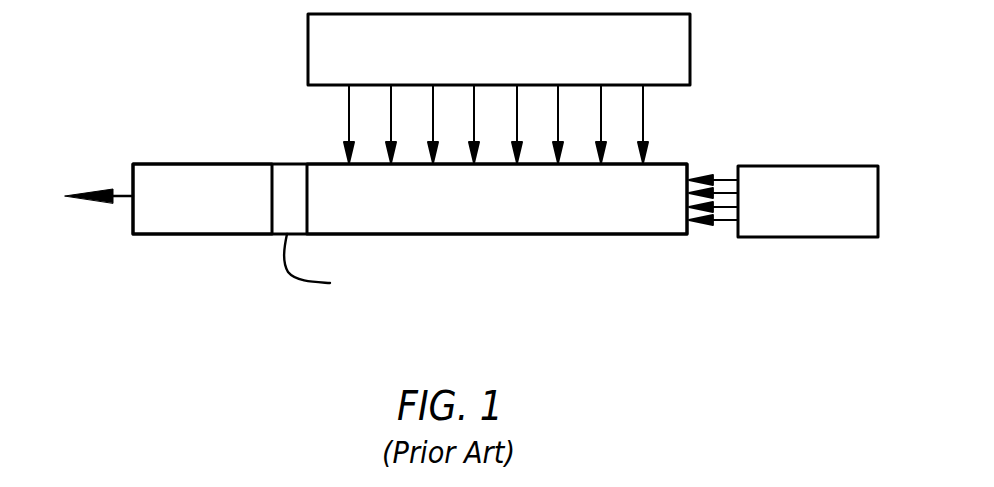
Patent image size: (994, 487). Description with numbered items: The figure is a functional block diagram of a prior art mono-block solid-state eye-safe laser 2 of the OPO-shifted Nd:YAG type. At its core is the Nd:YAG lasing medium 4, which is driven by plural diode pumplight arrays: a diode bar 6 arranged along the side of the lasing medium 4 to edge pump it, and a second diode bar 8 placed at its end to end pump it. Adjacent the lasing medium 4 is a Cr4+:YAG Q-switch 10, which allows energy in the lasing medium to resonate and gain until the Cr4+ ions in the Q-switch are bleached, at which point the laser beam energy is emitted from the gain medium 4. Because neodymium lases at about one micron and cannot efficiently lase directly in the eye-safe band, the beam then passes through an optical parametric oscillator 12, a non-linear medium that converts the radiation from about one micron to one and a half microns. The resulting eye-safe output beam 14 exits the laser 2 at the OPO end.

The mono-block laser 2 is at (222, 318).
The Nd:YAG lasing medium 4 is at (589, 234).
The edge-pumped diode bar 6 is at (690, 44).
The end-pumped diode bar 8 is at (808, 166).
The Cr4+:YAG Q-switch 10 is at (359, 334).
The optical parametric oscillator (OPO) 12 is at (203, 163).
The 1.5 micron output beam 14 is at (125, 200).